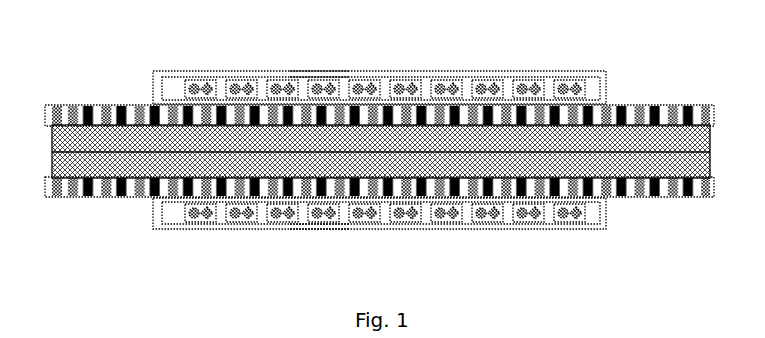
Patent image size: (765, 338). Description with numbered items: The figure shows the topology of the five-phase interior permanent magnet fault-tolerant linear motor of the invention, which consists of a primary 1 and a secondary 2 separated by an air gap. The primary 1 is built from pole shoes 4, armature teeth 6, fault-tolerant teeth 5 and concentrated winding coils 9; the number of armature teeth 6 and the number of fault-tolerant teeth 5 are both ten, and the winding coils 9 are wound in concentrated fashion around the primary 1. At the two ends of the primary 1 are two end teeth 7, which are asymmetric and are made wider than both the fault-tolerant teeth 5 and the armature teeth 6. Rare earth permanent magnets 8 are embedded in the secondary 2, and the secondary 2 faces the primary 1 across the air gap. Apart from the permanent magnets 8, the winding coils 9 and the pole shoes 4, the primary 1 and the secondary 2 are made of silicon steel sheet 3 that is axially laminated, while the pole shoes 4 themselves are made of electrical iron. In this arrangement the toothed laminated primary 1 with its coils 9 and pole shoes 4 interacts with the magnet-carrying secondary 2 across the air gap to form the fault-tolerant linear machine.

The primary 1 is at (157, 72).
The secondary 2 is at (63, 106).
The silicon steel sheet 3 is at (80, 106).
The pole shoe 4 is at (223, 97).
The fault-tolerant teeth 5 is at (308, 77).
The armature teeth 6 is at (329, 71).
The end tooth 7 is at (175, 98).
The permanent magnet 8 is at (120, 106).
The winding coils 9 is at (402, 97).